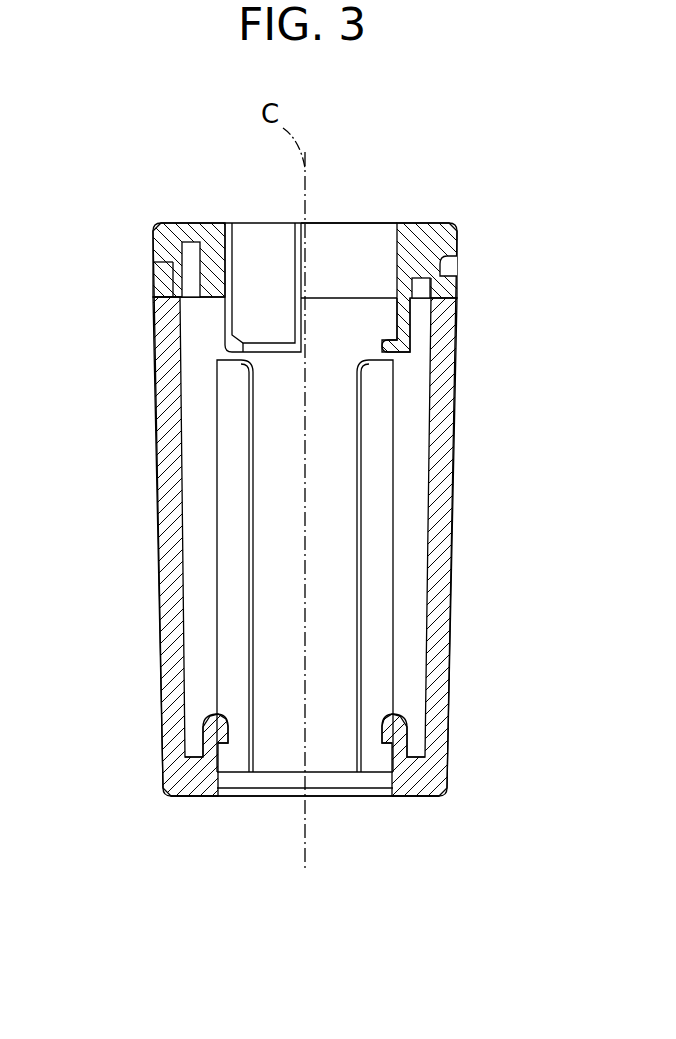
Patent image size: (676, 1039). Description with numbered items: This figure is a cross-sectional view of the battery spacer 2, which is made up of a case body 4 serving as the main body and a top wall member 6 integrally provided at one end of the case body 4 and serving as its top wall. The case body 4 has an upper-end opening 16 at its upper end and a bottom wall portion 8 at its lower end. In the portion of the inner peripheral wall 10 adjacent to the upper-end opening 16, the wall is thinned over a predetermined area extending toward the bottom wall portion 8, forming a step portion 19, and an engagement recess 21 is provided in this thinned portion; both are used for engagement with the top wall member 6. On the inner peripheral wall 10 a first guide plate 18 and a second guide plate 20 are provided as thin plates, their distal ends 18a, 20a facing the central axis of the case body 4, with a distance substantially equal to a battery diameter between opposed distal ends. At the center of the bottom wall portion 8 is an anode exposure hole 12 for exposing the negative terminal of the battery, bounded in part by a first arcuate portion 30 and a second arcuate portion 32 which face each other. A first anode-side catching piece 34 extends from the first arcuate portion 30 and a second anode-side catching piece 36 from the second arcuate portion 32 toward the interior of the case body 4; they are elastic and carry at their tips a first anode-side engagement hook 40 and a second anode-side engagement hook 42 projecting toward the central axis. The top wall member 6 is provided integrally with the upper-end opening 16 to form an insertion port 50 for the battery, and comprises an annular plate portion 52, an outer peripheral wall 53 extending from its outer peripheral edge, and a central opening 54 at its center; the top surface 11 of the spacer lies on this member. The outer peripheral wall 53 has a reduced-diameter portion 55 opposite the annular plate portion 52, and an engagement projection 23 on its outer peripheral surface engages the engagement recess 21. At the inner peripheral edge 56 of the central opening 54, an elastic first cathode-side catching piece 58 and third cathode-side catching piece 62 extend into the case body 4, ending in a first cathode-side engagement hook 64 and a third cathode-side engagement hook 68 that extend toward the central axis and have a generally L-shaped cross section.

The battery spacer 2 is at (129, 180).
The case body 4 is at (160, 612).
The top wall member 6 is at (453, 225).
The bottom wall portion 8 is at (418, 797).
The inner peripheral wall 10 is at (197, 400).
The top surface 11 is at (415, 223).
The anode exposure hole 12 is at (222, 805).
The upper-end opening 16 is at (458, 250).
The first guide plate 18 is at (160, 566).
The distal end of first guide plate 18a is at (250, 480).
The step portion 19 is at (175, 292).
The second guide plate 20 is at (456, 566).
The distal end of second guide plate 20a is at (362, 478).
The engagement recess 21 is at (440, 268).
The engagement projection 23 is at (433, 282).
The first arcuate portion 30 is at (218, 788).
The second arcuate portion 32 is at (385, 789).
The first anode-side catching piece 34 is at (207, 758).
The second anode-side catching piece 36 is at (403, 758).
The first anode-side engagement hook 40 is at (228, 718).
The second anode-side engagement hook 42 is at (384, 718).
The insertion port 50 is at (349, 260).
The annular plate portion 52 is at (178, 223).
The outer peripheral wall 53 is at (153, 240).
The central opening 54 is at (397, 253).
The reduced-diameter portion 55 is at (153, 265).
The inner peripheral edge 56 is at (222, 223).
The first cathode-side catching piece 58 is at (413, 313).
The third cathode-side catching piece 62 is at (186, 319).
The first cathode-side engagement hook 64 is at (382, 348).
The third cathode-side engagement hook 68 is at (268, 352).